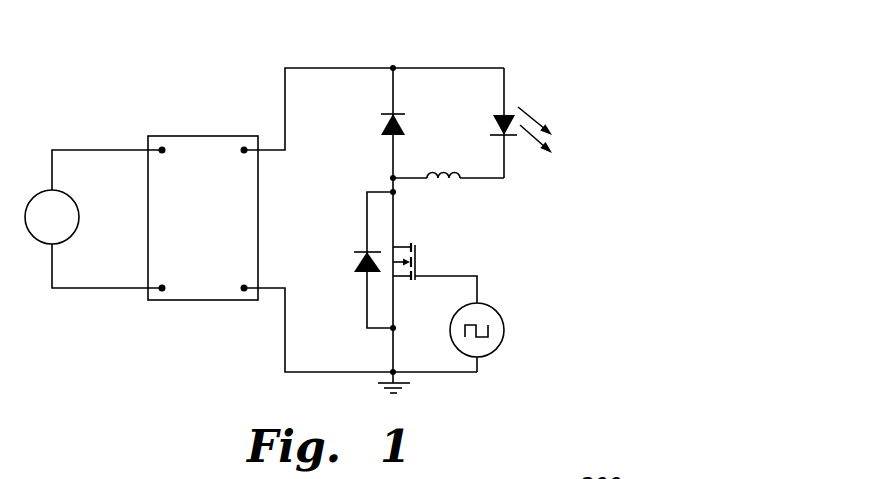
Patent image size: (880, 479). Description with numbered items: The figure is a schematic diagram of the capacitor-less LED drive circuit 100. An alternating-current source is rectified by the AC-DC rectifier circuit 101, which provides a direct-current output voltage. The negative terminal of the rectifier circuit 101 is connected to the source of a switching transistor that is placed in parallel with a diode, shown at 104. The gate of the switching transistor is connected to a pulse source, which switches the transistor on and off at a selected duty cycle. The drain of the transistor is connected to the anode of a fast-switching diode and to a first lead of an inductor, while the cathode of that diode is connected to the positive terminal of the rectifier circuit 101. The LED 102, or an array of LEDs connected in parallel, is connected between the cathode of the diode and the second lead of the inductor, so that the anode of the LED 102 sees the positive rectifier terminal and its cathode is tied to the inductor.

The capacitor-less LED drive circuit 100 is at (626, 84).
The AC-DC rectifier circuit 101 is at (200, 135).
The LED 102 is at (512, 113).
The switching transistor Q1 in parallel with a diode 104 is at (440, 251).